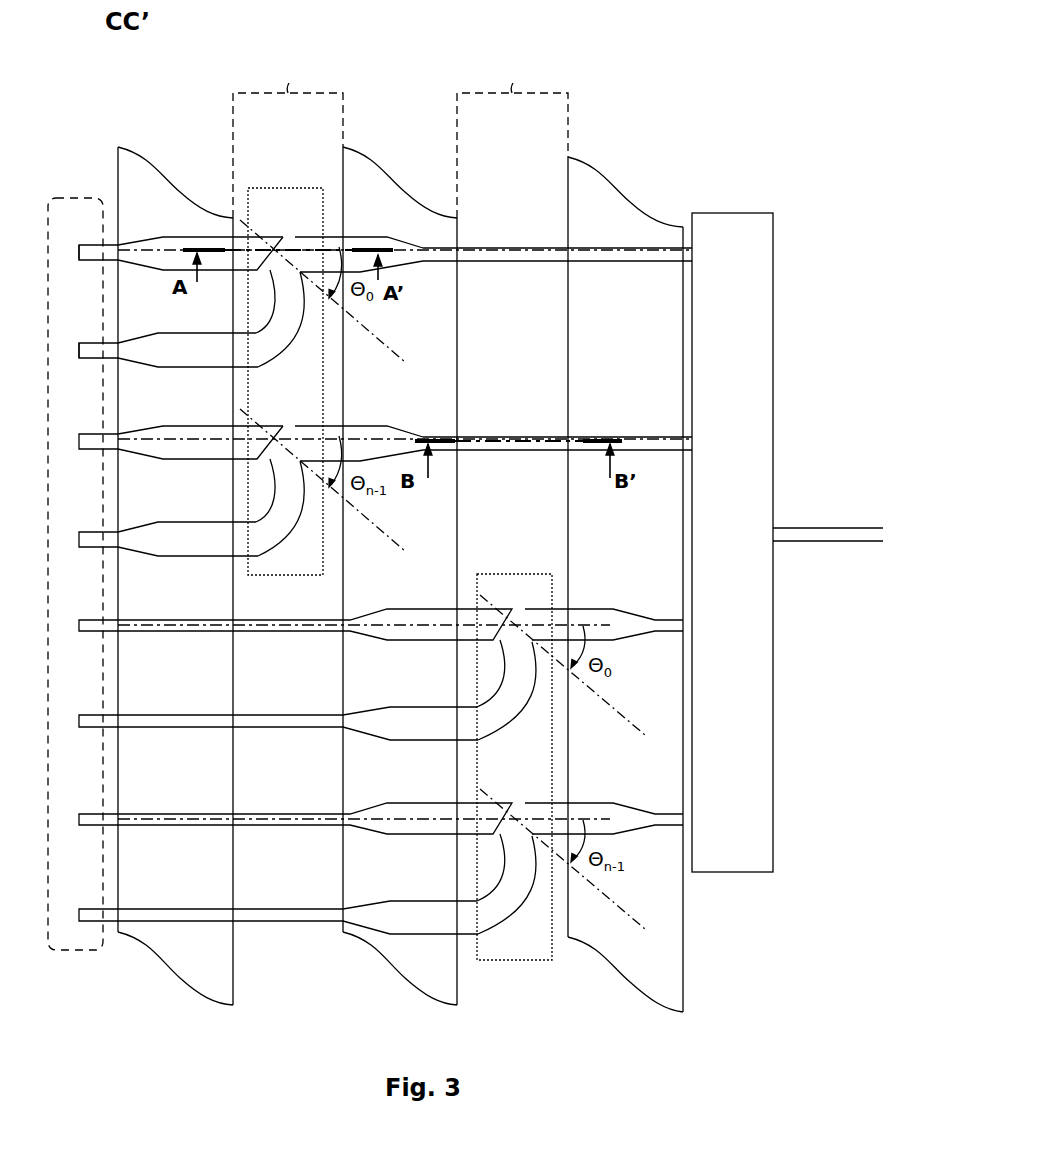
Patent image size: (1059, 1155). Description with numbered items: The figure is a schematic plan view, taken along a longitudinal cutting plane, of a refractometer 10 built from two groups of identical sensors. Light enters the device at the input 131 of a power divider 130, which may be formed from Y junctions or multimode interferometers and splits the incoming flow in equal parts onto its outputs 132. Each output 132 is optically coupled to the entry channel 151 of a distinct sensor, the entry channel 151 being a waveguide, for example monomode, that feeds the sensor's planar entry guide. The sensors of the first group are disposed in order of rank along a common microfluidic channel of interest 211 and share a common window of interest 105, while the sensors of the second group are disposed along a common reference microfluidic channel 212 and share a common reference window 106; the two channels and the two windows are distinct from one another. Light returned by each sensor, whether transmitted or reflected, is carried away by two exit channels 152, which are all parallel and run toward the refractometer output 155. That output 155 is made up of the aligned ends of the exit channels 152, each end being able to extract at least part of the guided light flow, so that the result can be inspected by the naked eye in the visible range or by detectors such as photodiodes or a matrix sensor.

The refractometer 10 is at (676, 110).
The window of interest 105 is at (252, 190).
The reference window 106 is at (530, 958).
The power divider 130 is at (750, 830).
The input of the power divider 131 is at (803, 541).
The outputs of the power divider 132 is at (693, 262).
The entry channel 151 is at (627, 262).
The exit channels 152 is at (88, 257).
The refractometer output 155 is at (72, 197).
The microfluidic channel of interest 211 is at (288, 134).
The reference microfluidic channel 212 is at (512, 134).